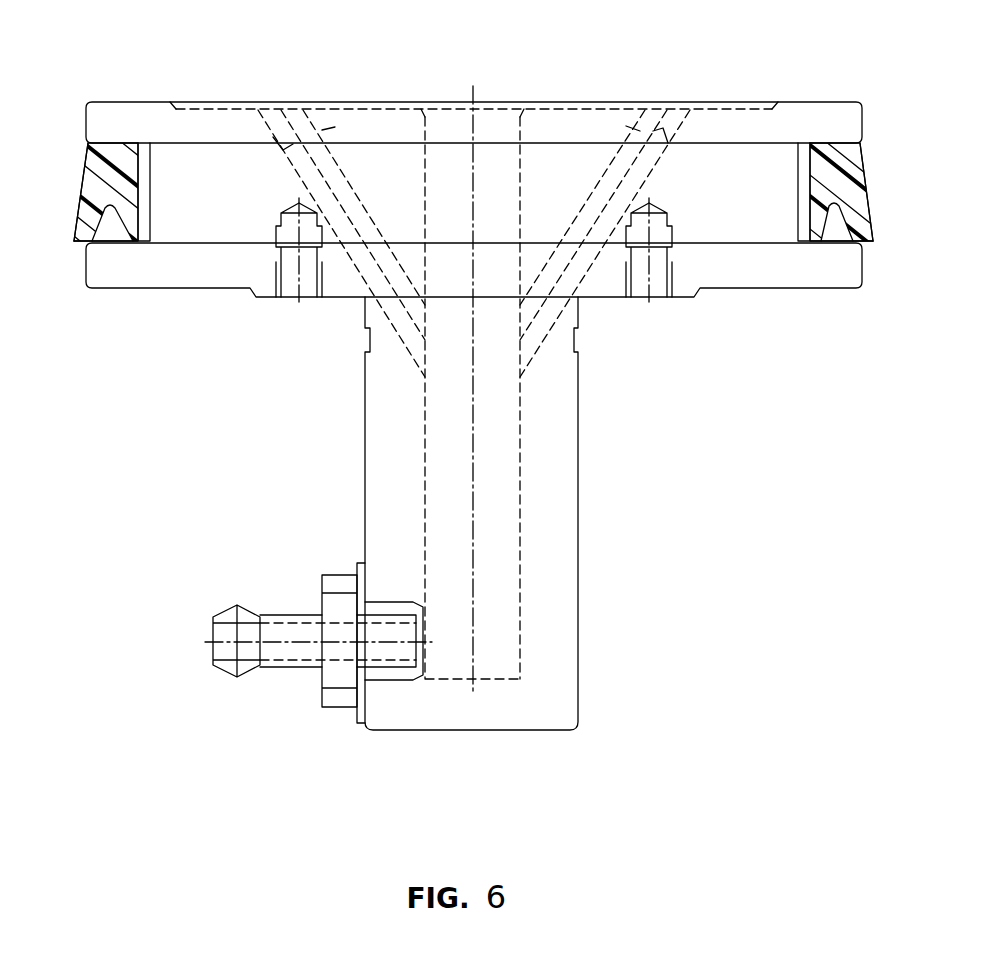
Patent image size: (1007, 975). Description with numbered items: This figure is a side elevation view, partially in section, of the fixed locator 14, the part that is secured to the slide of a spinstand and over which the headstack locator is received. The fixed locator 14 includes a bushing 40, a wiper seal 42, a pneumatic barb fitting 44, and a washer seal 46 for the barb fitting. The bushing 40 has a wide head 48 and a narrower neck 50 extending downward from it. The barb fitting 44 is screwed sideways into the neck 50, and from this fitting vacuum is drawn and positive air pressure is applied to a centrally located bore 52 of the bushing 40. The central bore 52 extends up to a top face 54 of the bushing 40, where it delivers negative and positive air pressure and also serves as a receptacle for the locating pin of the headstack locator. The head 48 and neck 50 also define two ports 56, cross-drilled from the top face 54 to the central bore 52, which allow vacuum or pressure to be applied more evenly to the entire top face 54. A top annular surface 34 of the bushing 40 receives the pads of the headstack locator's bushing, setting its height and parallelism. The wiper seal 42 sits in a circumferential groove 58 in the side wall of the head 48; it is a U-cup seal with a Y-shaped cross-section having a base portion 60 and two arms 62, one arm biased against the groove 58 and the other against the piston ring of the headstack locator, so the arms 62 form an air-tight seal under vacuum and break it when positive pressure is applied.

The fixed locator 14 is at (185, 353).
The top annular surface 34 is at (145, 103).
The bushing 40 is at (822, 104).
The wiper seal 42 is at (862, 178).
The pneumatic barb fitting 44 is at (285, 660).
The washer seal 46 is at (362, 717).
The head 48 is at (263, 297).
The neck 50 is at (362, 463).
The central bore 52 is at (518, 488).
The top face 54 is at (583, 108).
The ports 56 is at (327, 142).
The circumferential groove 58 is at (800, 175).
The base portion 60 is at (855, 162).
The arms 62 is at (863, 228).